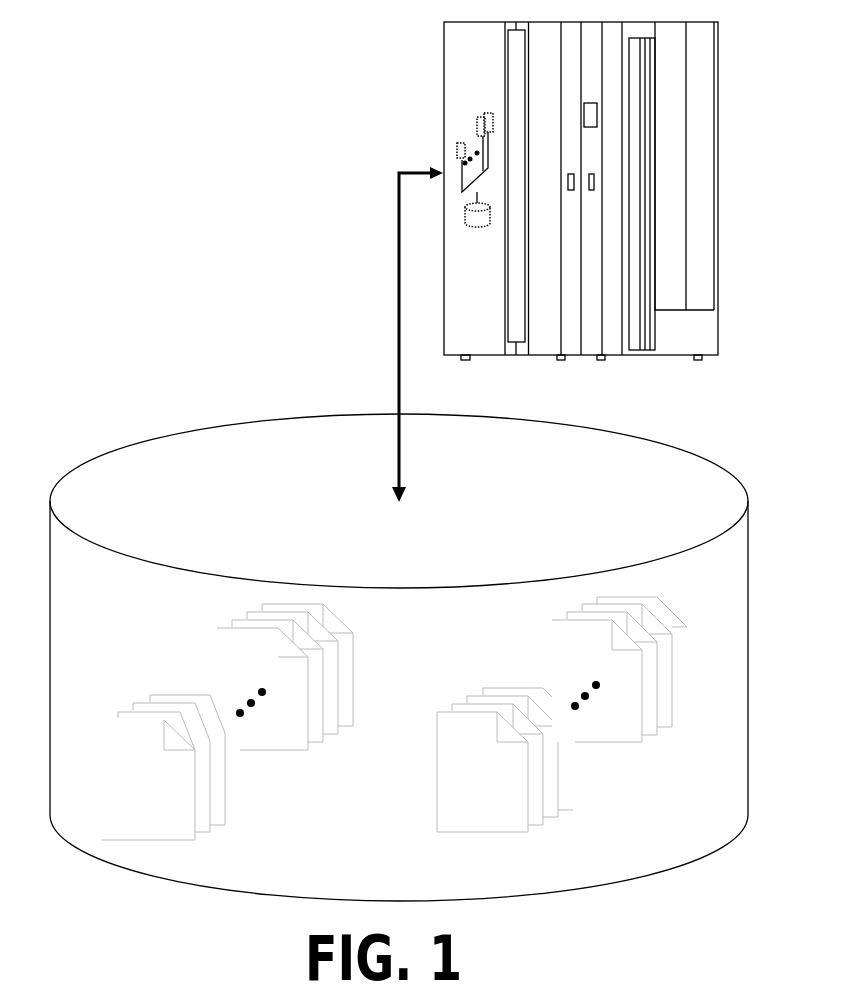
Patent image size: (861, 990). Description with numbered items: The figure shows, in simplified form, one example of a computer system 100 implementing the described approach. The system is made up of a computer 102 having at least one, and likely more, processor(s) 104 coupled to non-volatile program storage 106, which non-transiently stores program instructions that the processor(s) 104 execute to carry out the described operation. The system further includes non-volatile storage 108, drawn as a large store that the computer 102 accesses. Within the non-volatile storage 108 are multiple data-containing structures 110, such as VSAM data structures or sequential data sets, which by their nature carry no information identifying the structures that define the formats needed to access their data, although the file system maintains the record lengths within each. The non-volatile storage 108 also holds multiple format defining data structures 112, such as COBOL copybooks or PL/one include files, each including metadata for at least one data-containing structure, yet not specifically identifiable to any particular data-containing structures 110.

The computer system 100 is at (112, 98).
The computer 102 is at (467, 52).
The processor(s) 104 is at (476, 118).
The non-volatile program storage 106 is at (473, 218).
The non-volatile storage 108 is at (260, 450).
The data-containing structures 110 is at (264, 597).
The format defining data structures 112 is at (594, 587).